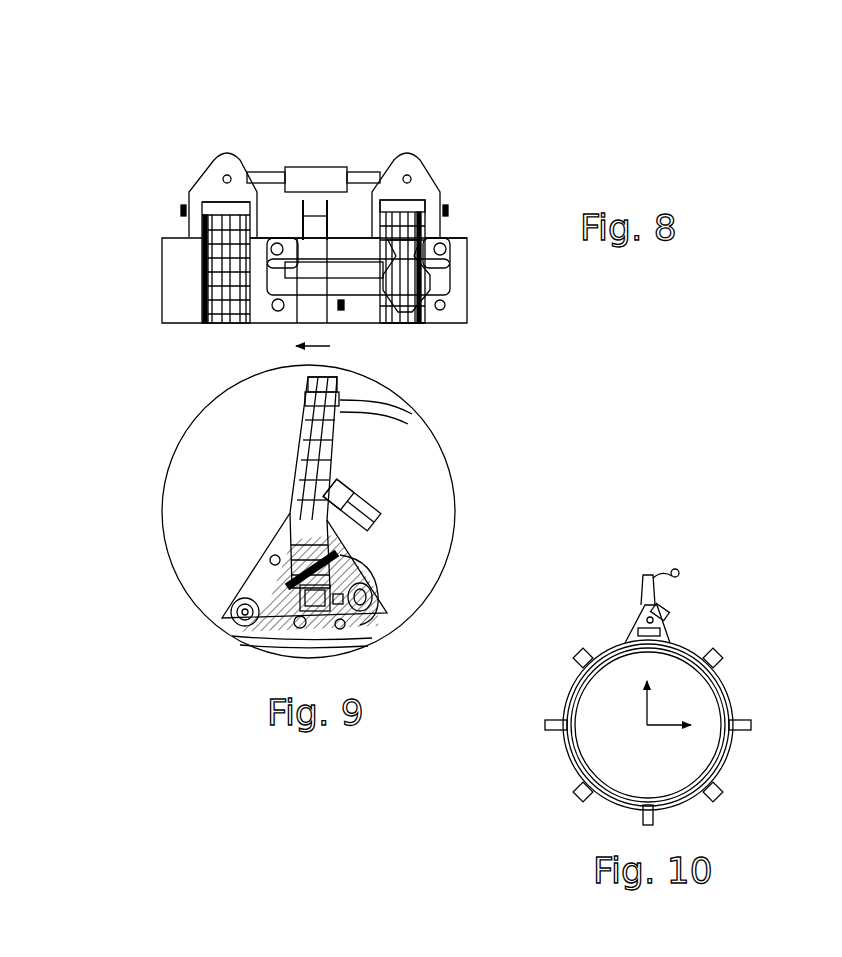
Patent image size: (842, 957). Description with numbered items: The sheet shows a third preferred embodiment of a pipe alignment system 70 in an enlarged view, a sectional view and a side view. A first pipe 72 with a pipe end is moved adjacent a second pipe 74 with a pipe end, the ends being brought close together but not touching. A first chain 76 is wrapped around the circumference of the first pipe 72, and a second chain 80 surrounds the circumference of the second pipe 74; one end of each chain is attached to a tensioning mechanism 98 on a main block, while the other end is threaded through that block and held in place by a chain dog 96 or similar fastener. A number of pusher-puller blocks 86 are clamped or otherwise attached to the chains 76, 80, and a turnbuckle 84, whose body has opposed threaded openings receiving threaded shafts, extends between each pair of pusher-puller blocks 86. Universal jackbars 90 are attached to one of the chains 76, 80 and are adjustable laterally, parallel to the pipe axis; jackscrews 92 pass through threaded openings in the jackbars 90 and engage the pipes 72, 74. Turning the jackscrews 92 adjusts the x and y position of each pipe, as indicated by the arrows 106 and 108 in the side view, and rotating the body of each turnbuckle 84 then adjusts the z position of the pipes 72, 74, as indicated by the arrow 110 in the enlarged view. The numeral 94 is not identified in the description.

In FIG. 8, the pipe alignment system 70 is at (419, 115).
In FIG. 10, the pipe alignment system 70 is at (666, 555).
In FIG. 8, the first pipe 72 is at (178, 291).
In FIG. 8, the second pipe 74 is at (470, 252).
In FIG. 8, the first chain 76 is at (206, 262).
In FIG. 8, the second chain 80 is at (426, 219).
In FIG. 8, the turnbuckle 84 is at (316, 178).
In FIG. 8, the pusher-puller block 86 is at (217, 171).
In FIG. 8, the universal jackbar 90 is at (423, 302).
In FIG. 8, the jackscrew 92 is at (280, 238).
In FIG. 9, the torch arm 94 is at (263, 540).
In FIG. 9, the chain dog 96 is at (357, 540).
In FIG. 9, the tensioning mechanism 98 is at (475, 470).
In FIG. 10, the arrow 106 is at (663, 723).
In FIG. 10, the arrow 108 is at (647, 699).
In FIG. 8, the arrow 110 is at (330, 346).